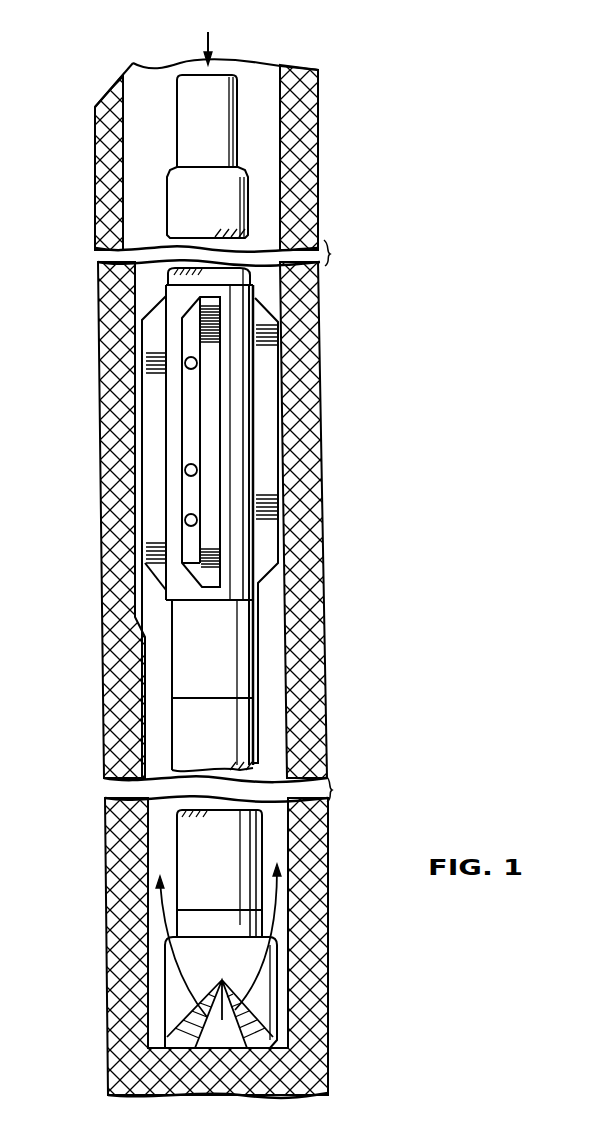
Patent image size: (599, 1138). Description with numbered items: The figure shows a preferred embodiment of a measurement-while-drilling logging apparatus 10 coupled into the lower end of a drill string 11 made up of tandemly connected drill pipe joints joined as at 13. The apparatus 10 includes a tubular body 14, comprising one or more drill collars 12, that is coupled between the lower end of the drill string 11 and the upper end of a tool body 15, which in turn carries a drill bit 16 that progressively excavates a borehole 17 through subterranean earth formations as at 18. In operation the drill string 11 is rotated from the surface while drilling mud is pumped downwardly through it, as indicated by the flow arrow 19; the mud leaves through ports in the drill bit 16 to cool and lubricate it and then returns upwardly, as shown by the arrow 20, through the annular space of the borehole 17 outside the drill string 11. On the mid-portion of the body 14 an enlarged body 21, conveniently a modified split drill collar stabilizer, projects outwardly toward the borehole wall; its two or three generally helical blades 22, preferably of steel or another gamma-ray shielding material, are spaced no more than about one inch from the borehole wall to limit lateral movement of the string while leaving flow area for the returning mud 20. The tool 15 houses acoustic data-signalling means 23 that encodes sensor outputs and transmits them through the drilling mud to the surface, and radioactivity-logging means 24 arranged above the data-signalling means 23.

The logging apparatus 10 is at (260, 528).
The drill string 11 is at (167, 165).
The drill collars 12 is at (252, 273).
The drill pipe joint connection 13 is at (240, 147).
The tubular body 14 is at (255, 405).
The tool body 15 is at (260, 737).
The drill bit 16 is at (277, 997).
The borehole 17 is at (135, 128).
The earth formations 18 is at (145, 823).
The flow arrow 19 is at (212, 42).
The return flow arrow 20 is at (277, 908).
The enlarged body 21 is at (180, 368).
The stabilizer blades 22 is at (200, 367).
The acoustic data-signalling means 23 is at (183, 643).
The radioactivity-logging means 24 is at (168, 507).